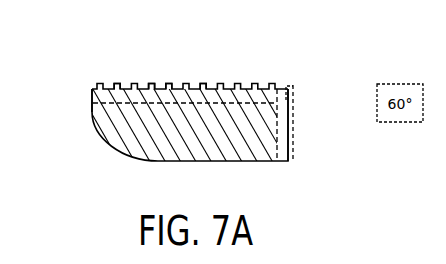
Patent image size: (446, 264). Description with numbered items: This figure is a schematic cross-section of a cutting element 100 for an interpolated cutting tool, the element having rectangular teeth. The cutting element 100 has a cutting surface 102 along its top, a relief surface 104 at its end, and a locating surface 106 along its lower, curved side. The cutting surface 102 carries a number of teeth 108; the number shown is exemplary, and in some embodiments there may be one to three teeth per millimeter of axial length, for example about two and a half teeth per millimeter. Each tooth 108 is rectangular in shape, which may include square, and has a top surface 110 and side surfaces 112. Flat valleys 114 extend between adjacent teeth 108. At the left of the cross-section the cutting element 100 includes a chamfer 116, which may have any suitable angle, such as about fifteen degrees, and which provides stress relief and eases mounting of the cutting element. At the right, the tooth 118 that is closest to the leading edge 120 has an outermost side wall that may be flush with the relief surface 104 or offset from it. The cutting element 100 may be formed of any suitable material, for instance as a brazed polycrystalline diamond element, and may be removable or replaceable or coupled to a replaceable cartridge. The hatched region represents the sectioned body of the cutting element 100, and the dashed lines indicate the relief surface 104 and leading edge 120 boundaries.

The cutting element 100 is at (94, 118).
The cutting surface 102 is at (231, 87).
The relief surface 104 is at (297, 133).
The locating surface 106 is at (123, 110).
The tooth 108 is at (138, 86).
The top surface 110 is at (179, 87).
The side surfaces 112 is at (160, 86).
The flat valley 114 is at (207, 87).
The chamfer 116 is at (95, 87).
The tooth closest to leading edge 118 is at (286, 87).
The leading edge 120 is at (297, 148).